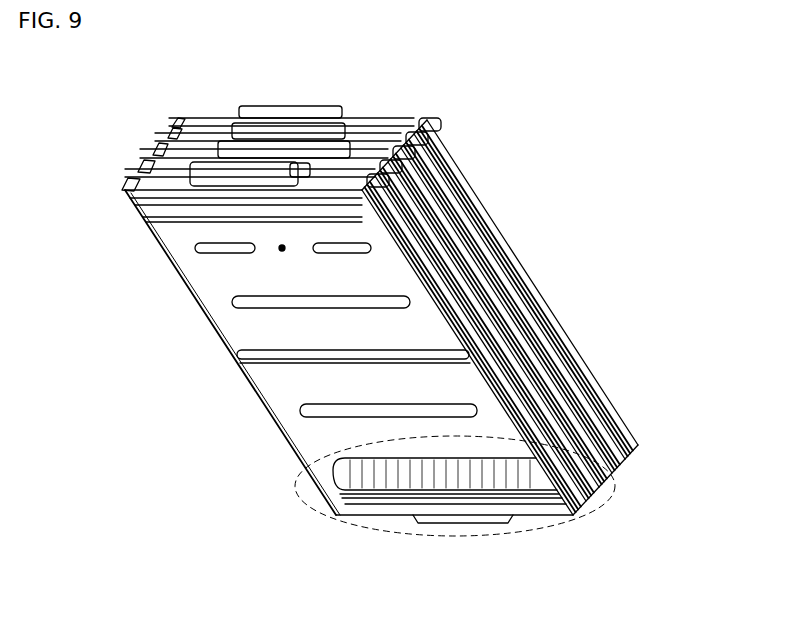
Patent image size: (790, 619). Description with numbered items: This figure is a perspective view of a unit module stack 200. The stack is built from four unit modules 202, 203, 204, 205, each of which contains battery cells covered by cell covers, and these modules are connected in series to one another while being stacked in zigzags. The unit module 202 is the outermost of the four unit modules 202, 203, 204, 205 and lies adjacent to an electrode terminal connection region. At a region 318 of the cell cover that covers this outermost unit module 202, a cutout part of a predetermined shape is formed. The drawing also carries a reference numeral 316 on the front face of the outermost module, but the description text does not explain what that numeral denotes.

The unit module stack 200 is at (78, 79).
The unit module 202 is at (290, 400).
The unit module 203 is at (600, 480).
The unit module 204 is at (565, 368).
The unit module 205 is at (520, 258).
The lower connector housing 316 is at (335, 470).
The region 318 is at (515, 533).